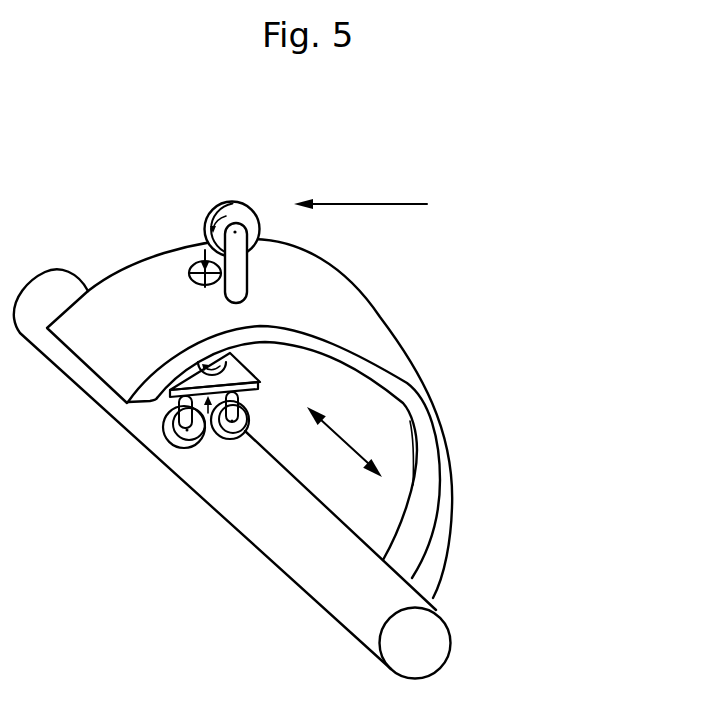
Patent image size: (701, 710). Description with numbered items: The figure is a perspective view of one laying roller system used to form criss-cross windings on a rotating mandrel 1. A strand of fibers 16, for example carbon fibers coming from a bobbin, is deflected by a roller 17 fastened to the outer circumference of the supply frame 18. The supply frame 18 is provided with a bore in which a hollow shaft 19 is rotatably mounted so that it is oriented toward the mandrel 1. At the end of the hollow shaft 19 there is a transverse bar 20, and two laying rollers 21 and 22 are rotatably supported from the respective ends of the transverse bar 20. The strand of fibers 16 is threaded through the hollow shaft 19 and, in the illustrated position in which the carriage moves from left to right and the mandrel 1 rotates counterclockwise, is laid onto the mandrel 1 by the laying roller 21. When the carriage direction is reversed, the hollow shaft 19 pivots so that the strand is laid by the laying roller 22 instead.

The mandrel 1 is at (262, 540).
The strand of fibers 16 is at (365, 203).
The roller 17 is at (260, 229).
The supply frame 18 is at (372, 325).
The hollow shaft 19 is at (233, 357).
The transverse bar 20 is at (257, 383).
The laying roller 21 is at (163, 423).
The laying roller 22 is at (243, 418).